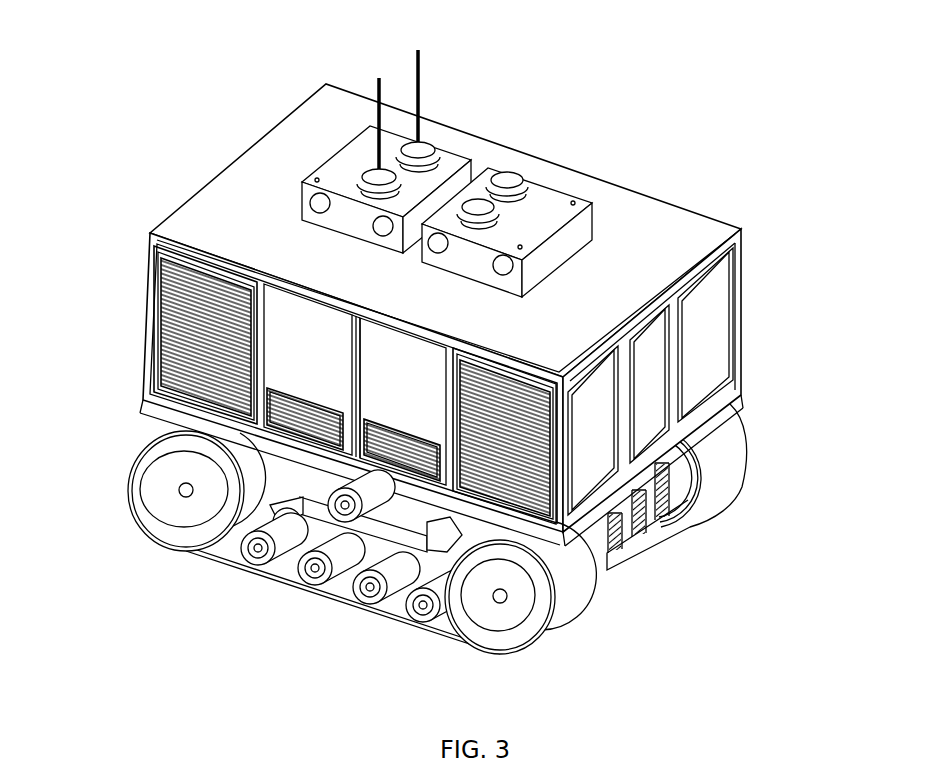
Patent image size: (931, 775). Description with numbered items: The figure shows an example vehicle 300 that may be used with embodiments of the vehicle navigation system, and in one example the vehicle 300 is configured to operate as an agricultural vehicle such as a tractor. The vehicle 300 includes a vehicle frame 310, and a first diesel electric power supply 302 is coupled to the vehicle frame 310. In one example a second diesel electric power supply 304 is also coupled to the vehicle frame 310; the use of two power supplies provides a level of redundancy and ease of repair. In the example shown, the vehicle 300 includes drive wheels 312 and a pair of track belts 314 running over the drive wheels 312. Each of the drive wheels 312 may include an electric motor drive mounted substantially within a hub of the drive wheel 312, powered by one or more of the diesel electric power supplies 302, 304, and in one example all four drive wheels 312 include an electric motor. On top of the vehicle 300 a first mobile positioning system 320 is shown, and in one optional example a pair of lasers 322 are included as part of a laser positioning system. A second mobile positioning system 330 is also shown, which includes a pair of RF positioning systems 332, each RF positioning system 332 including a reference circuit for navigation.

The vehicle 300 is at (663, 630).
The first diesel electric power supply 302 is at (515, 373).
The second diesel electric power supply 304 is at (148, 305).
The vehicle frame 310 is at (640, 508).
The drive wheels 312 is at (180, 503).
The track belts 314 is at (332, 547).
The first mobile positioning system 320 is at (538, 212).
The lasers 322 is at (513, 180).
The second mobile positioning system 330 is at (350, 163).
The RF positioning systems 332 is at (380, 102).